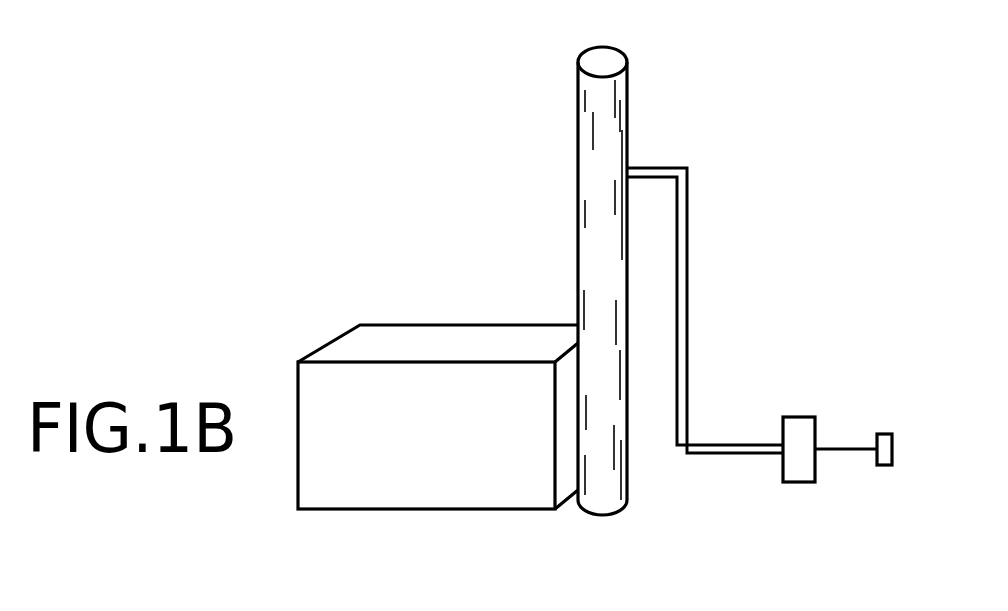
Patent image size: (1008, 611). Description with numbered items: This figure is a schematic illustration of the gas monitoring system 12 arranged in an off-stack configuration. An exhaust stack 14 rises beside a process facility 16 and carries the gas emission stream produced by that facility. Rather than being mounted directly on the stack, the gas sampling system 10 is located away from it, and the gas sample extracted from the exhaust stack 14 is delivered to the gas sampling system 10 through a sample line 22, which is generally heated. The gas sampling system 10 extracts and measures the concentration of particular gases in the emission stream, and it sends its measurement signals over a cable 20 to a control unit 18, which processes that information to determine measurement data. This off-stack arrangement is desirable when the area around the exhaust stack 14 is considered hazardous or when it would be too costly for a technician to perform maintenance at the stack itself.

The gas sampling system 10 is at (797, 483).
The gas monitoring system 12 is at (800, 335).
The exhaust stack 14 is at (577, 128).
The process facility 16 is at (393, 342).
The control unit 18 is at (877, 466).
The cable 20 is at (848, 448).
The sample line 22 is at (688, 274).